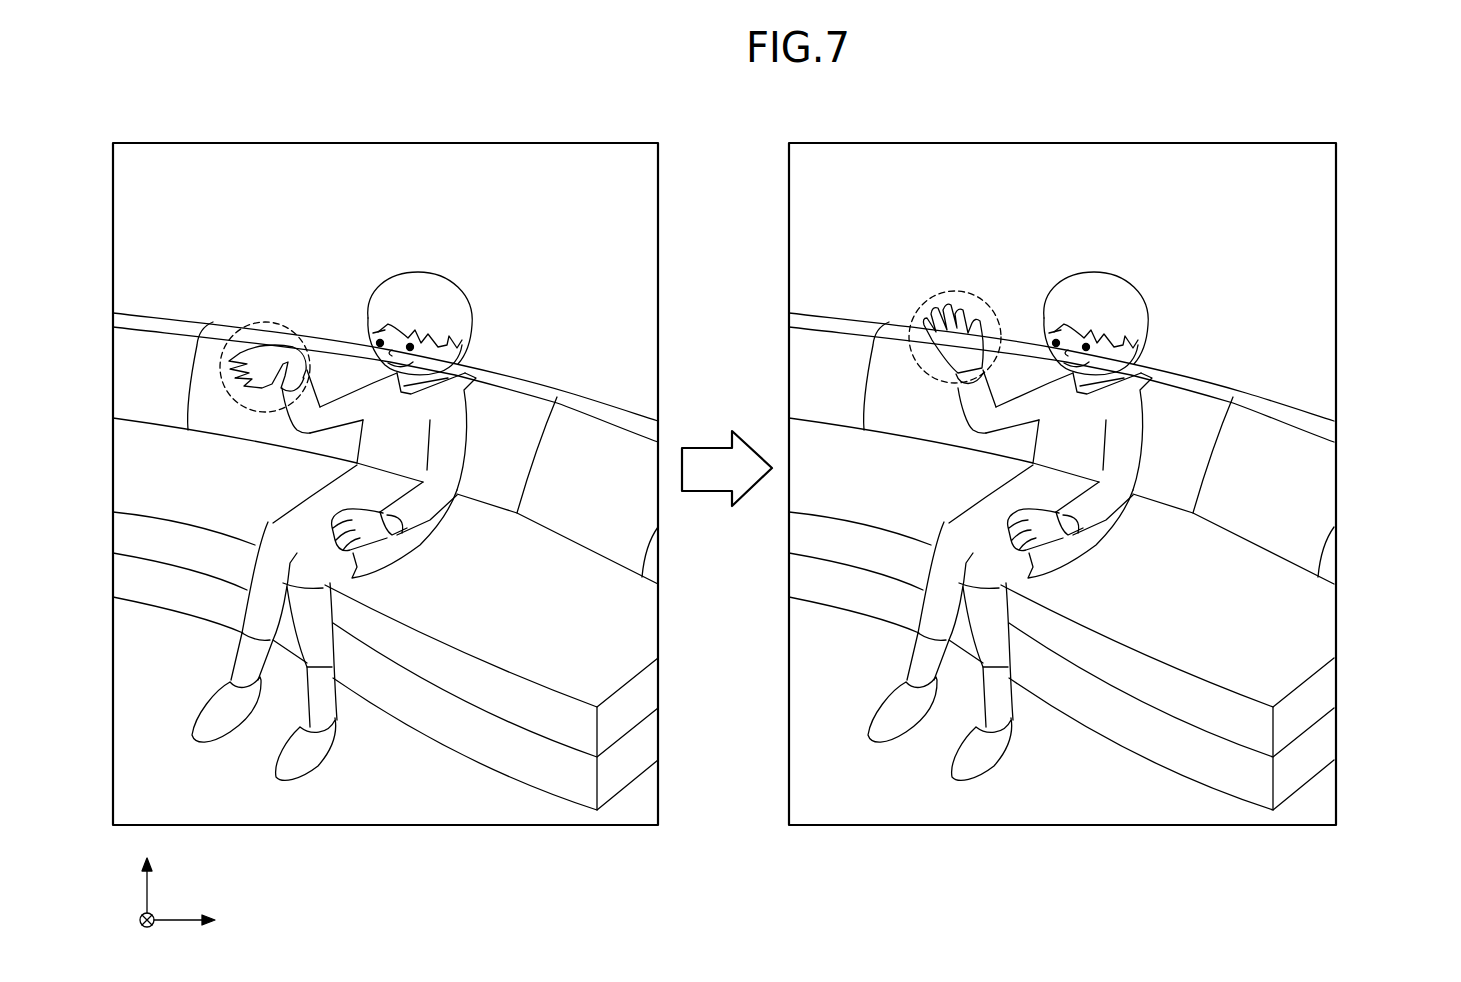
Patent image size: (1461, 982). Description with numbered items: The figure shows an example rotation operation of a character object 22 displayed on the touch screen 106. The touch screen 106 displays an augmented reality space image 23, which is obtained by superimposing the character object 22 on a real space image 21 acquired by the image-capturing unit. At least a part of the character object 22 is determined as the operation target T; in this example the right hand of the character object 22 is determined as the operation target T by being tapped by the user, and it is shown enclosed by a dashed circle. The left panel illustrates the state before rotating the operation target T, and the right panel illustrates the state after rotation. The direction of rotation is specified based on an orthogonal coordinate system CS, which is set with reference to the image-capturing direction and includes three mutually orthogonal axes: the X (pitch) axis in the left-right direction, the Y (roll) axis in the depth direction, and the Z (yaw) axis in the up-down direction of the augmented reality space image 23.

The touch screen 106 is at (658, 172).
The real space image 21 is at (638, 230).
The character object 22 is at (470, 305).
The augmented reality space image 23 is at (729, 218).
The operation target T is at (250, 327).
The orthogonal coordinate system CS is at (185, 897).